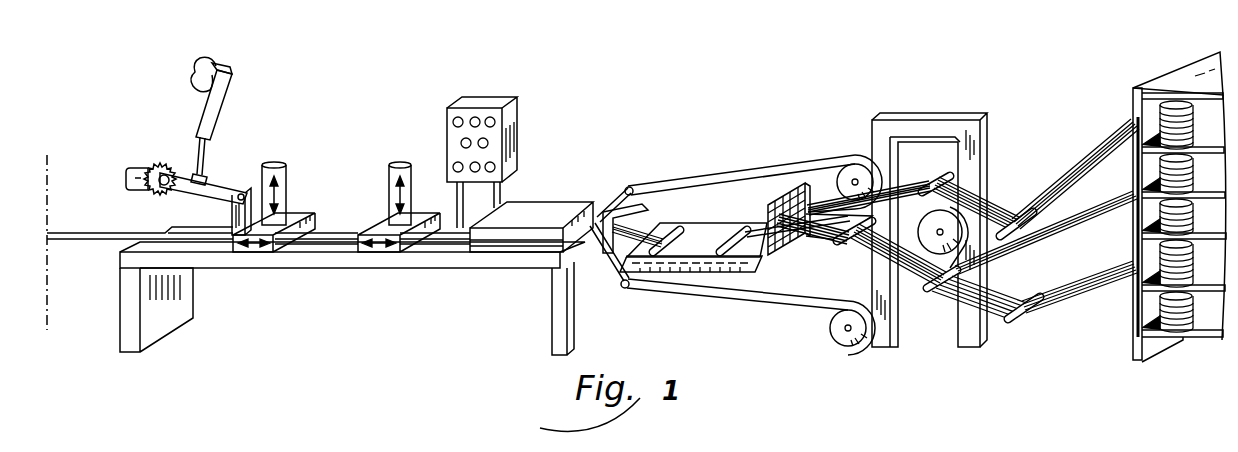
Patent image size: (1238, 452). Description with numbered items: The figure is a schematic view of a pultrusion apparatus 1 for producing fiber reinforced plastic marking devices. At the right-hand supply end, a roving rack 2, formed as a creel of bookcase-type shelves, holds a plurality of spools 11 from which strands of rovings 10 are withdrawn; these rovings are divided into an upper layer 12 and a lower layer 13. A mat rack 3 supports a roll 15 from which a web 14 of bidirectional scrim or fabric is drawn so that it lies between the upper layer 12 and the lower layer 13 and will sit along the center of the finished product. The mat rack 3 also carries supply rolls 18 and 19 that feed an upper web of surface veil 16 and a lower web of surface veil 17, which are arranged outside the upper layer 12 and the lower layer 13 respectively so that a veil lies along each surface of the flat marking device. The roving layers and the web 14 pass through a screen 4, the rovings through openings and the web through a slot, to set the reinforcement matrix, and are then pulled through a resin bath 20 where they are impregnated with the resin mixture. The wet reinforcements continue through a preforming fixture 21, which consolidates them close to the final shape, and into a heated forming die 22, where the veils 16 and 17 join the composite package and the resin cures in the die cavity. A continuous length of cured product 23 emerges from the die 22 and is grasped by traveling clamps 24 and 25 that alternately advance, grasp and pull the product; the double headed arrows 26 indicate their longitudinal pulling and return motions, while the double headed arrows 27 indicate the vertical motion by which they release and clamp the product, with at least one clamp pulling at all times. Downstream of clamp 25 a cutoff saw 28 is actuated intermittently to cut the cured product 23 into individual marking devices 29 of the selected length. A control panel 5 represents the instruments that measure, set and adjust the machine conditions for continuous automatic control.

The pultrusion apparatus 1 is at (578, 131).
The roving rack 2 is at (1147, 83).
The mat rack 3 is at (975, 118).
The screen 4 is at (773, 202).
The control panel 5 is at (517, 108).
The rovings 10 is at (1122, 200).
The spools 11 is at (1190, 122).
The upper layer 12 is at (1002, 197).
The lower layer 13 is at (950, 294).
The web 14 is at (910, 197).
The roll 15 is at (972, 248).
The upper web of surface veil 16 is at (813, 155).
The lower web of surface veil 17 is at (808, 297).
The supply roll 18 is at (856, 163).
The supply roll 19 is at (832, 337).
The resin bath 20 is at (730, 272).
The preforming fixture 21 is at (641, 210).
The heated forming die 22 is at (571, 208).
The cured product 23 is at (450, 242).
The traveling clamp 24 is at (402, 161).
The traveling clamp 25 is at (272, 162).
The double headed arrows 26 is at (254, 254).
The double headed arrows 27 is at (282, 172).
The cutoff saw 28 is at (163, 164).
The marking devices 29 is at (94, 232).